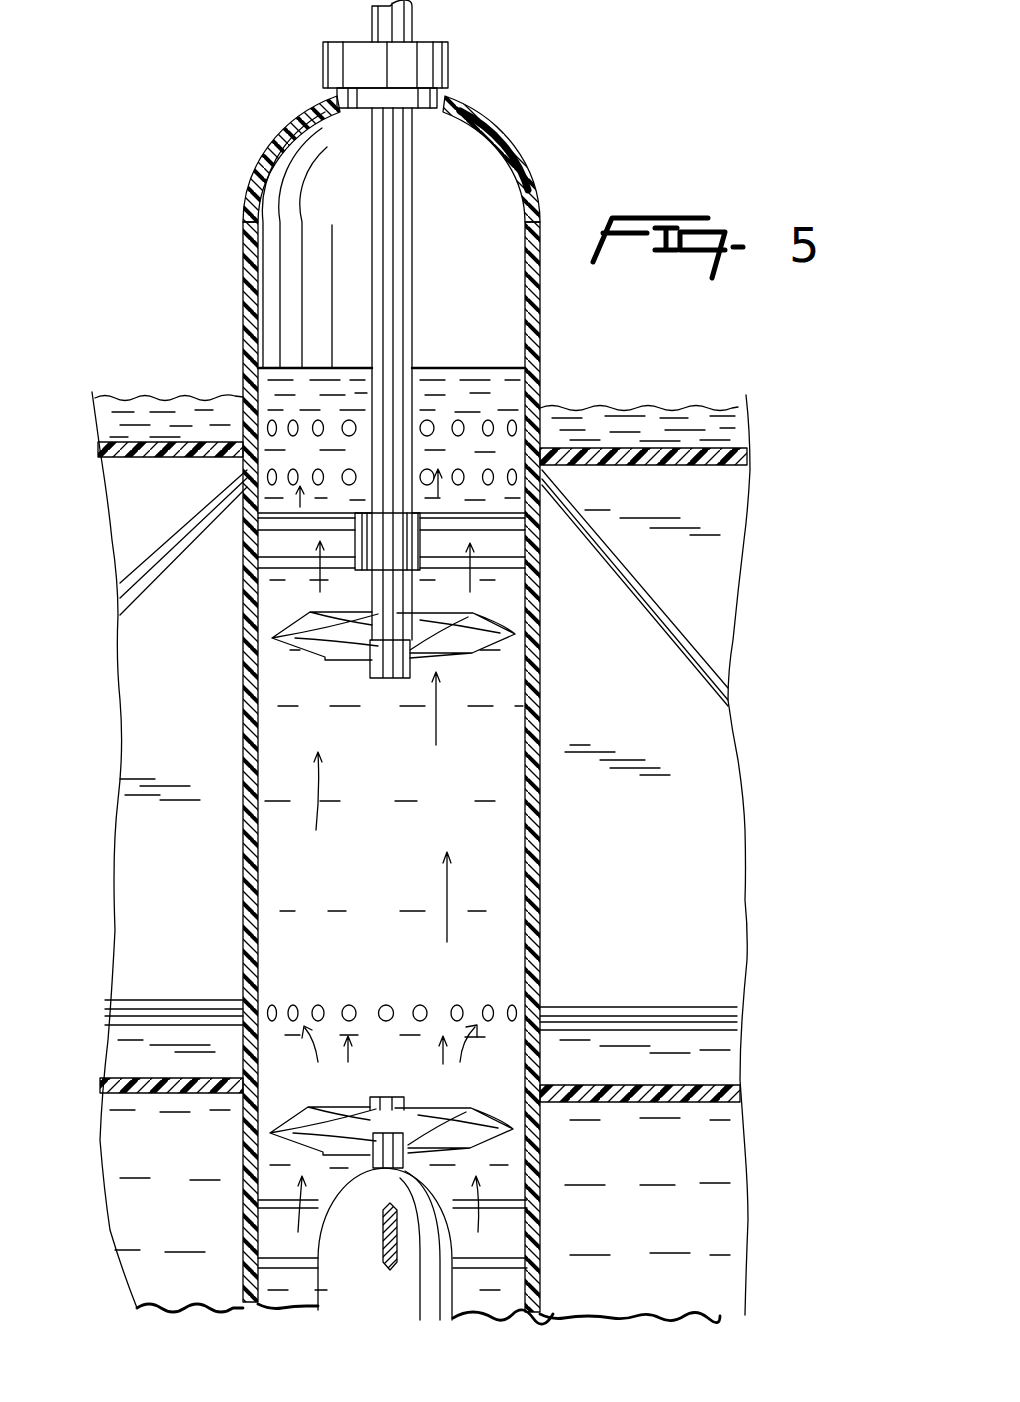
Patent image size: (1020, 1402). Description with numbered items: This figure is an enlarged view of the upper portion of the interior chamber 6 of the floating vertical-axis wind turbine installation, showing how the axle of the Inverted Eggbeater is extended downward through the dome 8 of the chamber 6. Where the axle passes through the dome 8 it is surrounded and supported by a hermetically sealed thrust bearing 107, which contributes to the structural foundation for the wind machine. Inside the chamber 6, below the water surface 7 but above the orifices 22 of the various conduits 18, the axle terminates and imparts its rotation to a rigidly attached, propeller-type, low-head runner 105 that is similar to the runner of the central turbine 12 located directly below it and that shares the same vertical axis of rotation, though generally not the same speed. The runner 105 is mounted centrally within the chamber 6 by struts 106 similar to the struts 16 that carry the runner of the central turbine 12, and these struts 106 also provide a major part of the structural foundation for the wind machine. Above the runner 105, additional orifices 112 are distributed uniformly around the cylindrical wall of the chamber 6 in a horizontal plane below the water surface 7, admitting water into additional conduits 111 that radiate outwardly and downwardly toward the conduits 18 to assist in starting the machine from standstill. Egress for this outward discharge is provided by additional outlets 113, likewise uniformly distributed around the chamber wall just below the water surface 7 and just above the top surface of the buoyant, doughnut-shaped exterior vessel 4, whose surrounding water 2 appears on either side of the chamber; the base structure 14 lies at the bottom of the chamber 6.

The water surface 2 is at (613, 398).
The exterior vessel 4 is at (664, 448).
The interior chamber 6 is at (541, 831).
The water surface 7 is at (347, 368).
The dome 8 is at (533, 168).
The central turbine 12 is at (276, 1130).
The base dome 14 is at (365, 1305).
The struts 16 is at (265, 1234).
The conduits 18 is at (195, 1000).
The orifices 22 is at (386, 1004).
The low-head runner 105 is at (300, 648).
The struts 106 is at (298, 557).
The thrust bearing 107 is at (335, 64).
The additional conduits 111 is at (192, 532).
The additional orifices 112 is at (462, 485).
The additional outlets 113 is at (512, 420).